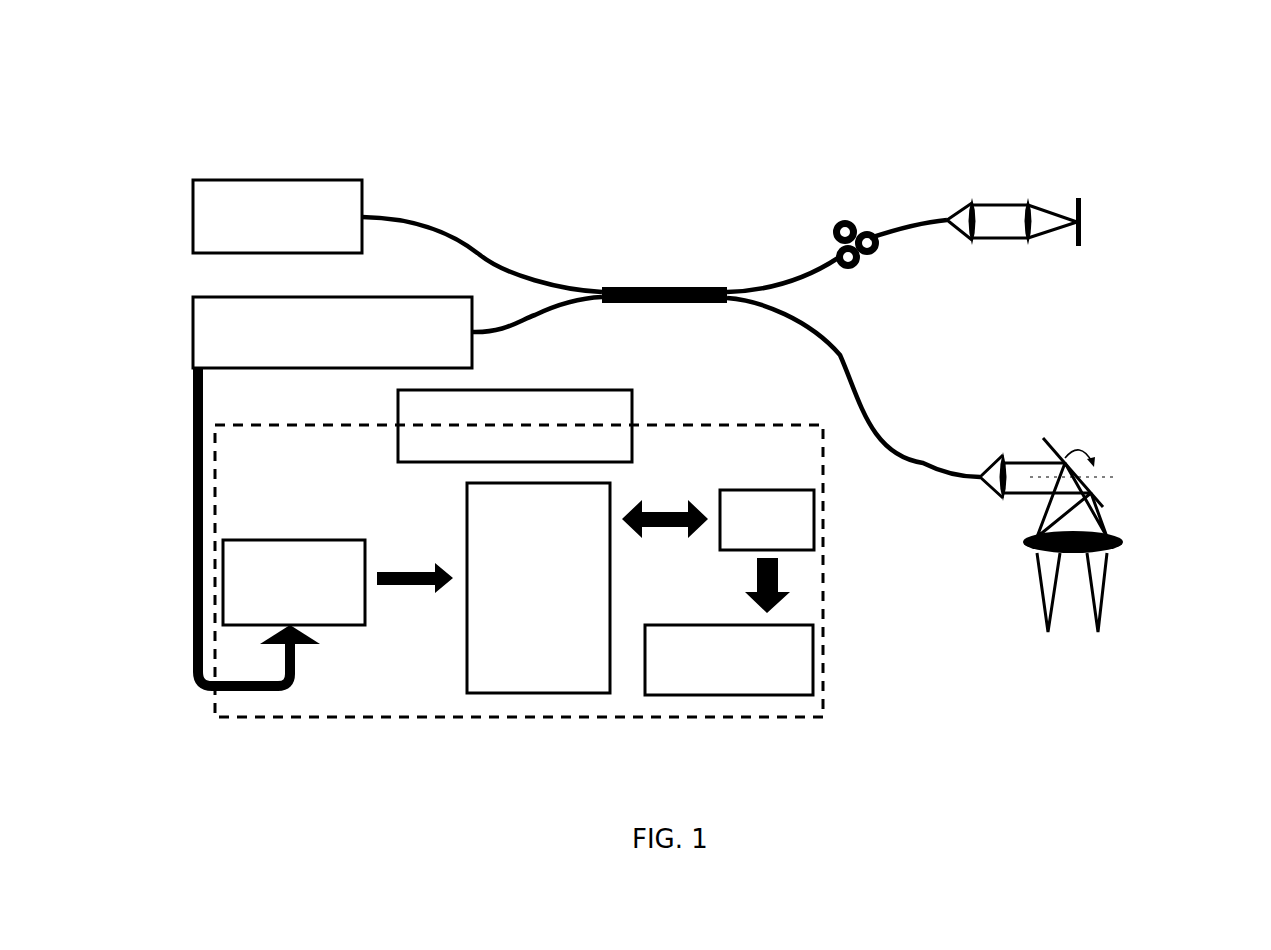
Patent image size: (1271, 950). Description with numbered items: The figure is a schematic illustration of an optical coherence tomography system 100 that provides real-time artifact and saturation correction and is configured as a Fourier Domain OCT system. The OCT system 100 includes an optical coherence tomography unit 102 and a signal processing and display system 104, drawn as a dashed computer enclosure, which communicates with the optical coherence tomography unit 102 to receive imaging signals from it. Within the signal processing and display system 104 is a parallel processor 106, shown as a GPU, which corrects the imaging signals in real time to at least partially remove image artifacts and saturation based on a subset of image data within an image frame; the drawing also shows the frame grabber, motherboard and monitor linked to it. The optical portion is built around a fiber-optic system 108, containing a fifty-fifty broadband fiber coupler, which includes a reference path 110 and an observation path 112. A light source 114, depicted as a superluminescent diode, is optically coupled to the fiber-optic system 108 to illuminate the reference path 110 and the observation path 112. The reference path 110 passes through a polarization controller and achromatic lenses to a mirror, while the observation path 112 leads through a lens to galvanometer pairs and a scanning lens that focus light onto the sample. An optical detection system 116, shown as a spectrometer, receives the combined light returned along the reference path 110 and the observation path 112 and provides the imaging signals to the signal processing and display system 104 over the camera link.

The optical coherence tomography system 100 is at (843, 93).
The optical coherence tomography unit 102 is at (1143, 291).
The signal processing and display system 104 is at (823, 582).
The parallel processor 106 is at (758, 490).
The fiber-optic system 108 is at (774, 245).
The reference path 110 is at (912, 222).
The observation path 112 is at (853, 388).
The light source 114 is at (313, 180).
The optical detection system 116 is at (360, 297).